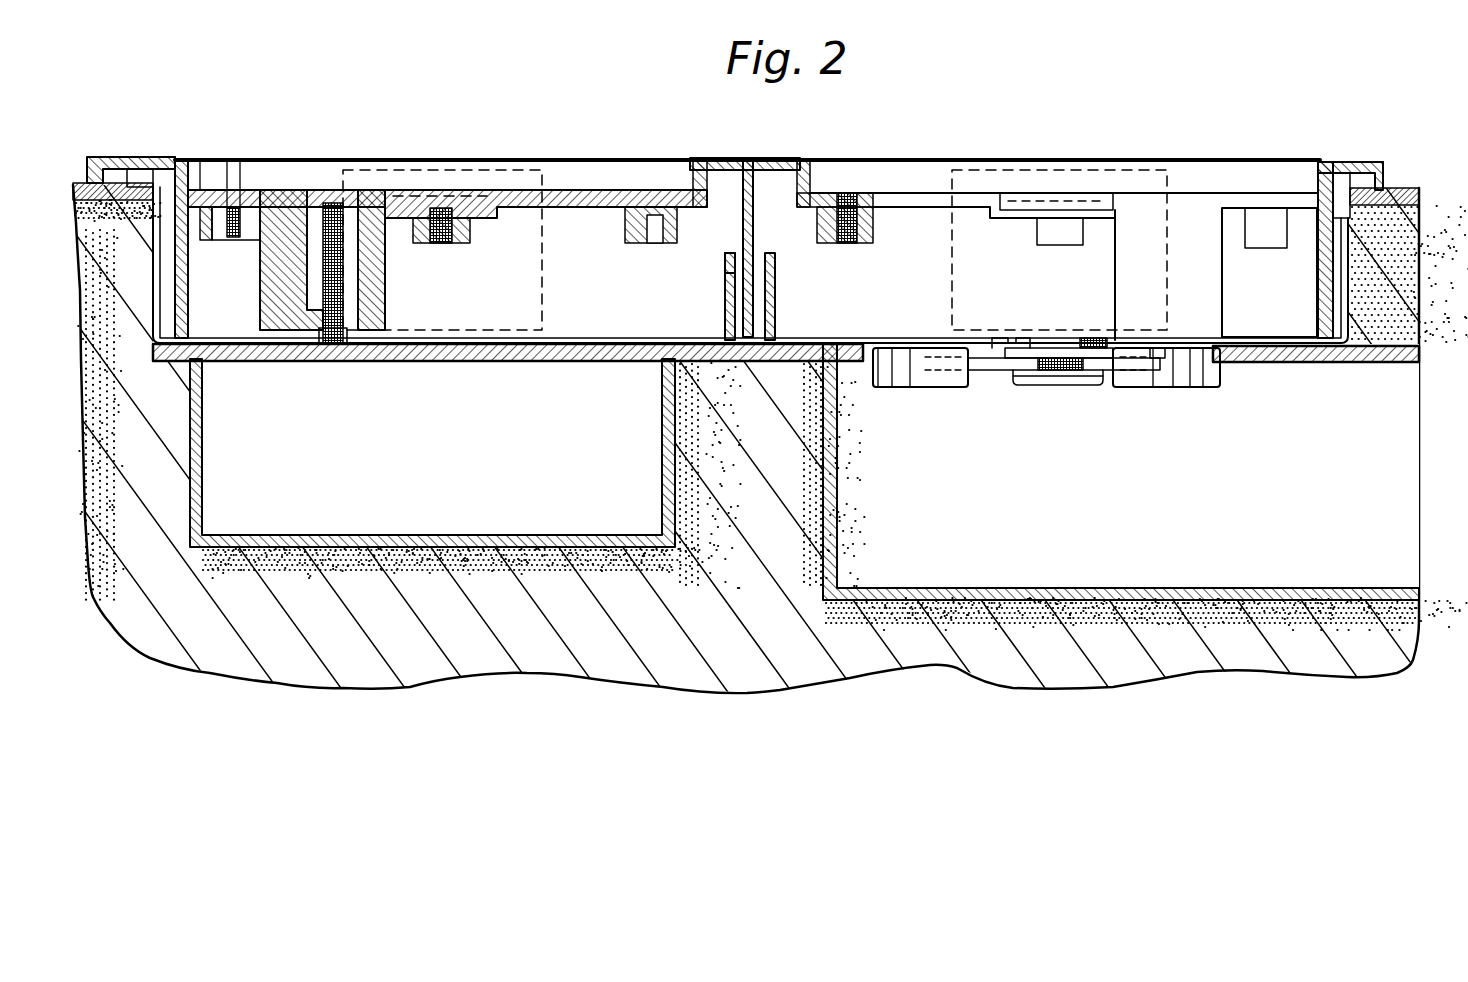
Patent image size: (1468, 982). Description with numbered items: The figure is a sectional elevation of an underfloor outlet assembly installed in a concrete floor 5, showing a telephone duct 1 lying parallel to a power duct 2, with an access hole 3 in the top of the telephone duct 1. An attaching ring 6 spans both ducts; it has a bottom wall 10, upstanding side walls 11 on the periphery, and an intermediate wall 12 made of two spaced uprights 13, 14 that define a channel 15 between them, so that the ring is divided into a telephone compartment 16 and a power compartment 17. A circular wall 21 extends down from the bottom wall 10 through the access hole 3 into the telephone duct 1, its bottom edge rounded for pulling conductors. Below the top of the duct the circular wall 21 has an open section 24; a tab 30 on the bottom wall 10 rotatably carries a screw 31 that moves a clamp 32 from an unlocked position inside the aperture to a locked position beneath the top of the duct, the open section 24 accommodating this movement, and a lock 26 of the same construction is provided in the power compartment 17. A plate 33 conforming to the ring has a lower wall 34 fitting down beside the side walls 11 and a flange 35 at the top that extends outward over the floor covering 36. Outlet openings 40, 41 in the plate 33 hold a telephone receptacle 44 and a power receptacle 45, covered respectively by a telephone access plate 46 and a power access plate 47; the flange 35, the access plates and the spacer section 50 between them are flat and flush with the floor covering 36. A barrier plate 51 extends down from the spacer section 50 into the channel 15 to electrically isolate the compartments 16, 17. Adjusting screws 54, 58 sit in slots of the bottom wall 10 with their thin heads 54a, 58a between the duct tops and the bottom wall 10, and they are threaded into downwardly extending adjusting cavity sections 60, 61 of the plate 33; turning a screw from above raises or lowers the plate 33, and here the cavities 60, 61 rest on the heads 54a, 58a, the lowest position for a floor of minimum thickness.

The telephone duct 1 is at (827, 530).
The power duct 2 is at (193, 487).
The access hole 3 is at (985, 365).
The concrete floor 5 is at (567, 660).
The attaching ring 6 is at (1374, 327).
The bottom wall 10 is at (808, 353).
The side walls 11 is at (157, 322).
The intermediate wall 12 is at (760, 249).
The upright 13 is at (732, 290).
The upright 14 is at (770, 303).
The channel 15 is at (733, 250).
The telephone compartment 16 is at (1009, 263).
The power compartment 17 is at (476, 287).
The circular wall 21 is at (583, 343).
The open section 24 is at (970, 387).
The lock 26 is at (1073, 393).
The tab 30 is at (1035, 350).
The screw 31 is at (1077, 343).
The clamp 32 is at (1017, 373).
The plate 33 is at (293, 207).
The lower wall 34 is at (177, 285).
The flange 35 is at (145, 156).
The floor covering 36 is at (110, 182).
The outlet opening 40 is at (1293, 172).
The outlet opening 41 is at (700, 185).
The telephone receptacle 44 is at (1077, 170).
The power receptacle 45 is at (513, 158).
The telephone access plate 46 is at (853, 180).
The power access plate 47 is at (237, 182).
The spacer section 50 is at (737, 162).
The barrier plate 51 is at (745, 193).
The adjusting screw 54 is at (1182, 343).
The head 54a is at (1158, 357).
The adjusting screw 58 is at (380, 156).
The head 58a is at (332, 345).
The adjusting cavity section 60 is at (1127, 262).
The adjusting cavity section 61 is at (380, 320).